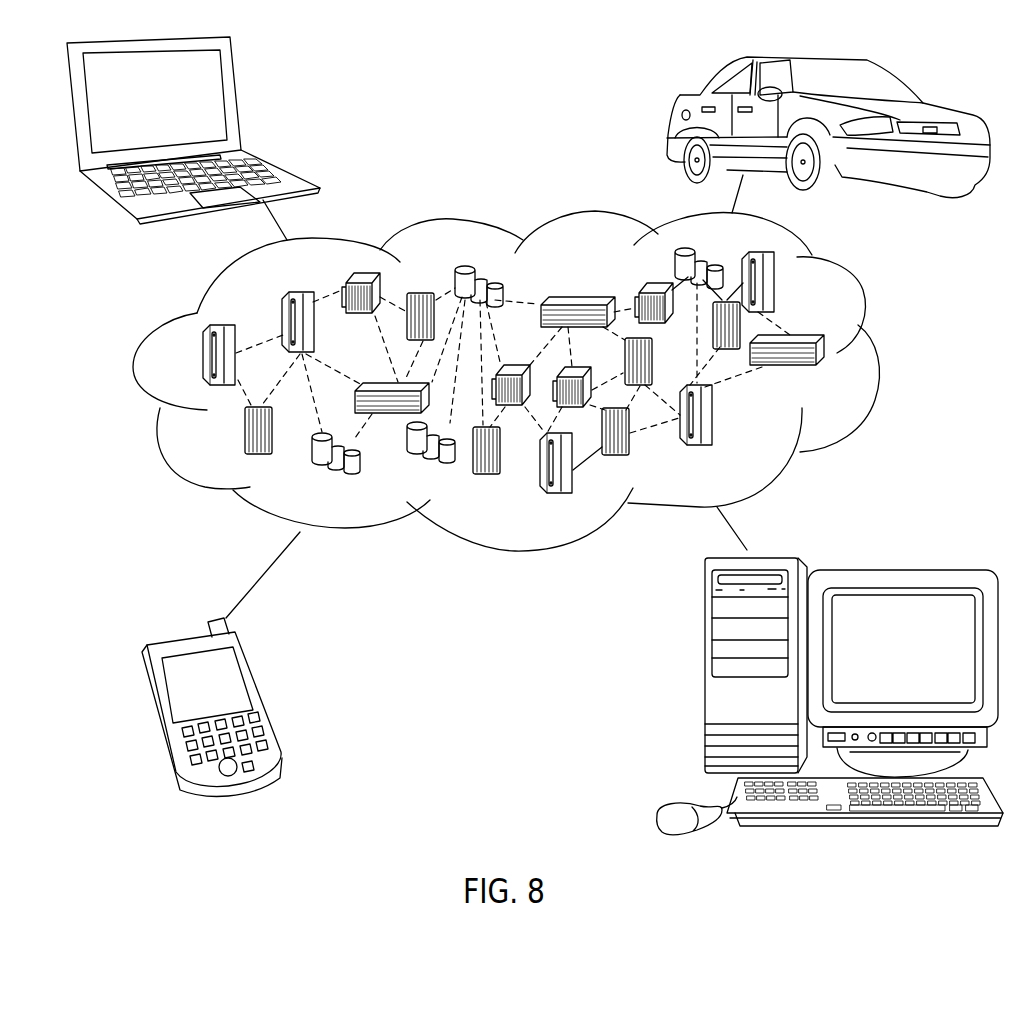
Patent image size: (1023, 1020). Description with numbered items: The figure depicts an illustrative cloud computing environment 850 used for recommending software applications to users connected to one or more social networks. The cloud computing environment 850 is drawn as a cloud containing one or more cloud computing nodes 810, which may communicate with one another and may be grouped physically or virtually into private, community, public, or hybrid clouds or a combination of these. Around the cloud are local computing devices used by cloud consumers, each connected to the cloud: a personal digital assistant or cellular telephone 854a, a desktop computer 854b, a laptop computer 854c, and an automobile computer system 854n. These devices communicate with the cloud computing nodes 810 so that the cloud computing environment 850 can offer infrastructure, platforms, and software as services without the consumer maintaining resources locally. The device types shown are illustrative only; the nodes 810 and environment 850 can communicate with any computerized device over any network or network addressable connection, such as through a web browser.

The cloud computing environment 850 is at (865, 295).
The cloud computing nodes 810 is at (850, 380).
The personal digital assistant (PDA) or cellular telephone 854a is at (258, 680).
The desktop computer 854b is at (703, 677).
The laptop computer 854c is at (238, 92).
The automobile computer system 854n is at (677, 102).